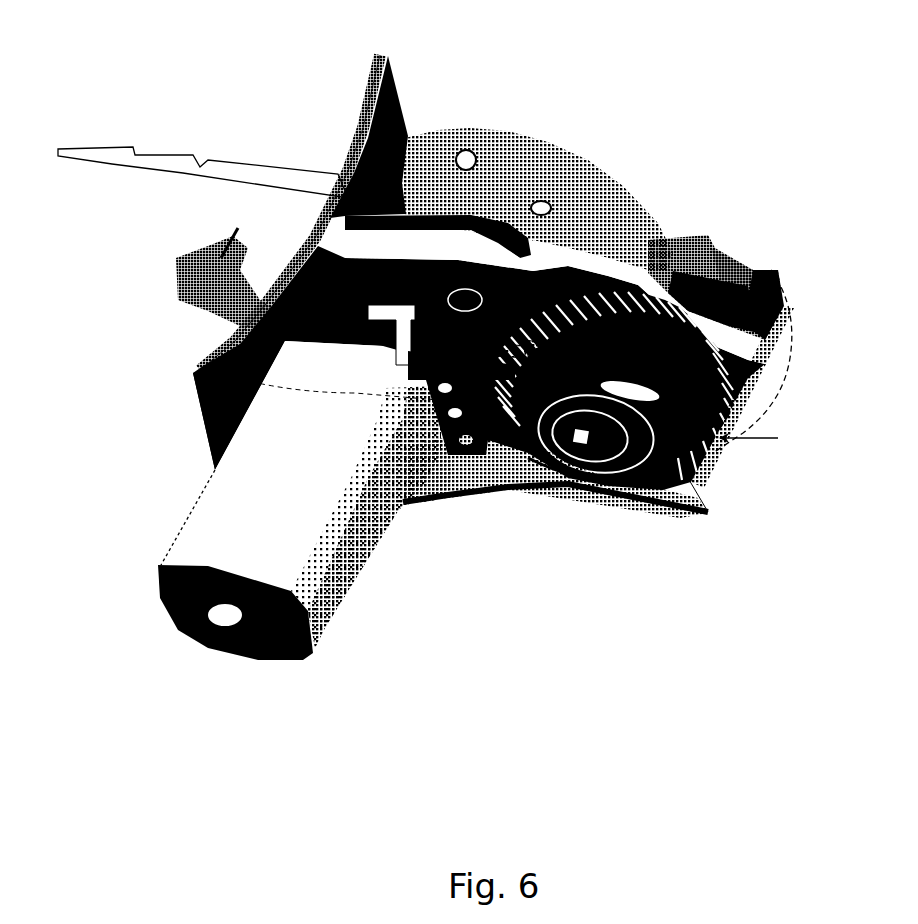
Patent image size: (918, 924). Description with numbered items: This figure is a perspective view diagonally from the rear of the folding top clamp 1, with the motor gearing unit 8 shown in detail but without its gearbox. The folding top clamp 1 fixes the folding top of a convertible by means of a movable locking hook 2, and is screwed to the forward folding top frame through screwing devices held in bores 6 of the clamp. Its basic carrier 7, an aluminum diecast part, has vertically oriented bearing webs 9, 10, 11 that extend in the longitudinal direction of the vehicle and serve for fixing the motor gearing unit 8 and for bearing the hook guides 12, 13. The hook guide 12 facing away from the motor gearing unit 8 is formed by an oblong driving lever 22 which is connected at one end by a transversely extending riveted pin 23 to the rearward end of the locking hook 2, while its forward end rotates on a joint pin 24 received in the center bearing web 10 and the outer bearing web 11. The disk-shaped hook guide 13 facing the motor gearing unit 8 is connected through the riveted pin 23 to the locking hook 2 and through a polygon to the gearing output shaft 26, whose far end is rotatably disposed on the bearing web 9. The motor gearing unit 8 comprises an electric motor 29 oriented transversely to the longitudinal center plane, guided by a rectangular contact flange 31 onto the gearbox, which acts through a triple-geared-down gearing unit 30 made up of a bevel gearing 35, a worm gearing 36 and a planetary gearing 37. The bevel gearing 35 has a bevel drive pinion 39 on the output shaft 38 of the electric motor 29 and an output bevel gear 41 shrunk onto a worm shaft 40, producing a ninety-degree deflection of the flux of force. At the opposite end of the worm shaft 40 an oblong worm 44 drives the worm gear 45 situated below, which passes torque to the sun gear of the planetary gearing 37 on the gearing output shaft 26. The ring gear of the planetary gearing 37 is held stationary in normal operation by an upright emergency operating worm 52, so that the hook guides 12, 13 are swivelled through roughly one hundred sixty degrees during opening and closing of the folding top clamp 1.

The folding top clamp 1 is at (690, 566).
The locking hook 2 is at (172, 278).
The bores 6 is at (459, 142).
The basic carrier 7 is at (505, 141).
The motor gearing unit 8 is at (325, 620).
The bearing web 9 is at (350, 248).
The center bearing web 10 is at (343, 135).
The outer bearing web 11 is at (663, 233).
The hook guide 12 is at (778, 302).
The hook guide 13 is at (747, 374).
The driving lever 22 is at (723, 266).
The riveted pin 23 is at (780, 265).
The joint pin 24 is at (703, 243).
The gearing output shaft 26 is at (547, 480).
The electric motor 29 is at (190, 522).
The gearing unit 30 is at (500, 492).
The contact flange 31 is at (447, 455).
The bevel gearing 35 is at (385, 347).
The worm gearing 36 is at (628, 490).
The planetary gearing 37 is at (690, 478).
The output shaft 38 is at (235, 325).
The bevel drive pinion 39 is at (378, 338).
The worm shaft 40 is at (480, 335).
The output bevel gear 41 is at (402, 356).
The worm 44 is at (555, 290).
The worm gear 45 is at (586, 482).
The emergency operating worm 52 is at (462, 262).